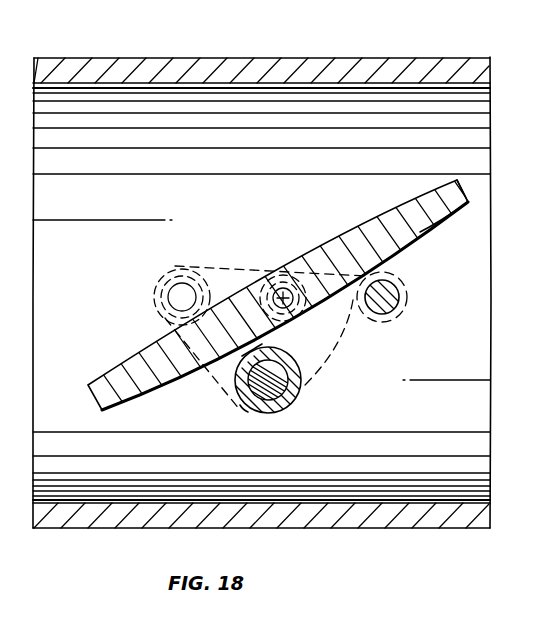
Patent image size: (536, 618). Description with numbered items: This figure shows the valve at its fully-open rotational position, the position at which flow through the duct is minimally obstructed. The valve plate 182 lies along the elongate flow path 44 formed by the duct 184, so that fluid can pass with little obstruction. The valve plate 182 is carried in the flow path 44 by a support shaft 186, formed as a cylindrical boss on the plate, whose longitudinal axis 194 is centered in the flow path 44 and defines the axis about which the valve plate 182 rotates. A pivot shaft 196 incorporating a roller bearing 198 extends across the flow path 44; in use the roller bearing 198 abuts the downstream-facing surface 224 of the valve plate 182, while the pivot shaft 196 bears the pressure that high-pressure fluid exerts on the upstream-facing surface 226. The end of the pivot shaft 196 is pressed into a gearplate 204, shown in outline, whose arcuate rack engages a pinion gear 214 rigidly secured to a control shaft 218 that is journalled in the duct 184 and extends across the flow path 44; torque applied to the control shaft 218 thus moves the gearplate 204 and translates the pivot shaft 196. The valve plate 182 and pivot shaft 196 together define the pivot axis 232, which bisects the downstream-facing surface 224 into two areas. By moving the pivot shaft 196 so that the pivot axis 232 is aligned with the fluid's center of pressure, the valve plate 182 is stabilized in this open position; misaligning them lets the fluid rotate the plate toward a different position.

The flow path 44 is at (111, 278).
The duct 184 is at (310, 34).
The valve plate 182 is at (330, 232).
The support shaft 186 is at (191, 282).
The longitudinal axis 194 is at (283, 288).
The gearplate 204 is at (235, 265).
The upstream-facing surface 226 is at (442, 177).
The downstream-facing surface 224 is at (462, 214).
The pivot axis 232 is at (252, 350).
The control shaft 218 is at (400, 297).
The pinion gear 214 is at (401, 320).
The roller bearing 198 is at (302, 372).
The pivot shaft 196 is at (239, 410).